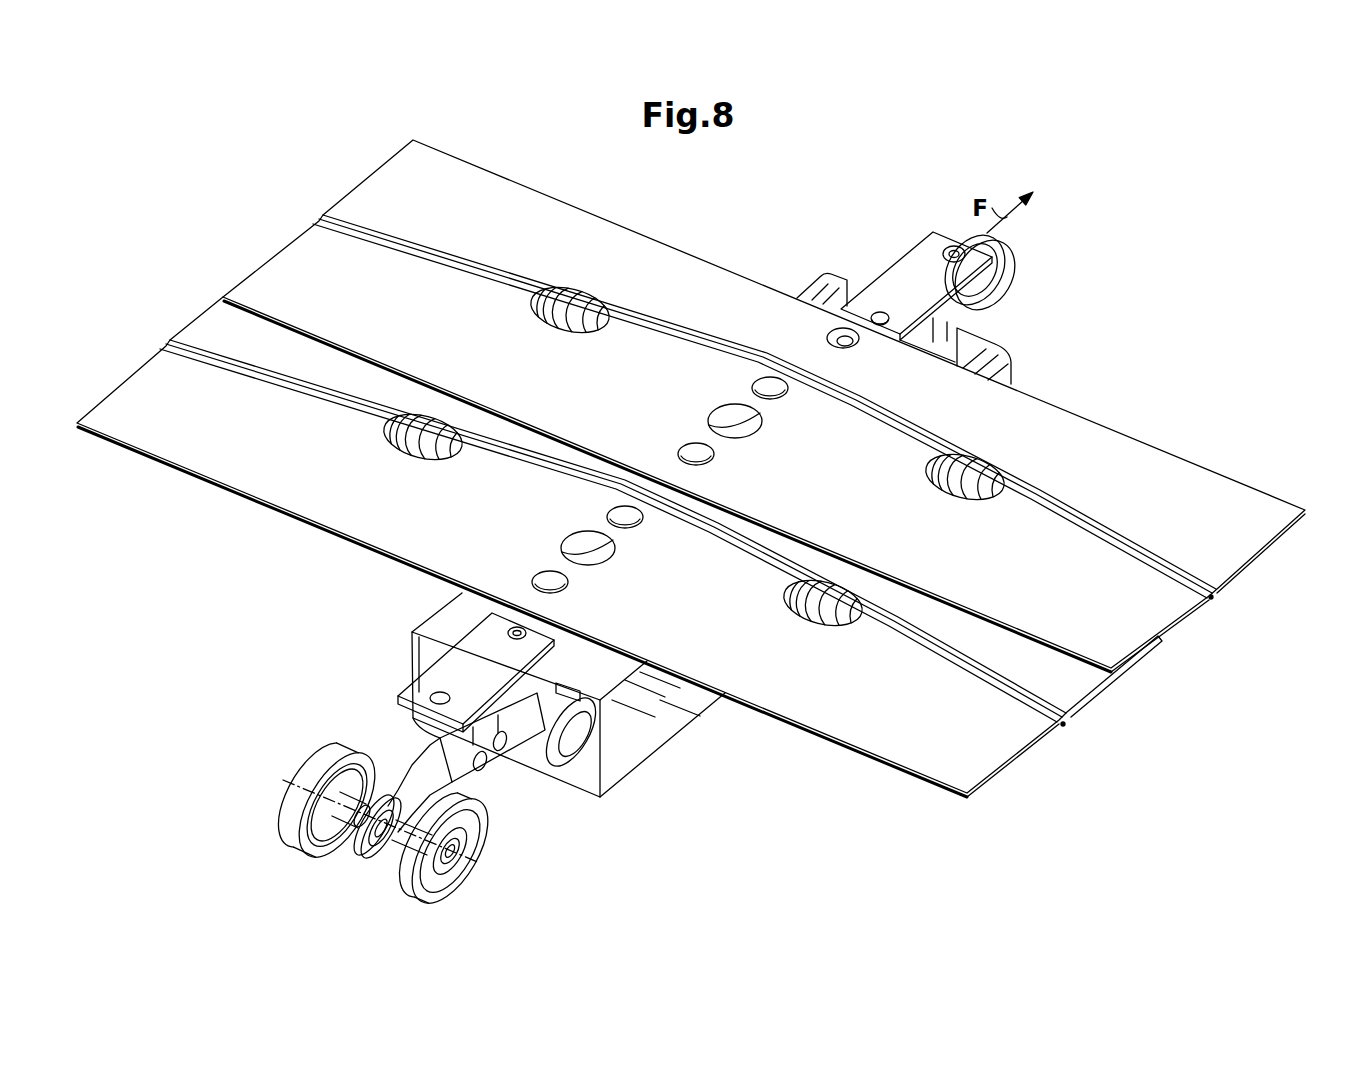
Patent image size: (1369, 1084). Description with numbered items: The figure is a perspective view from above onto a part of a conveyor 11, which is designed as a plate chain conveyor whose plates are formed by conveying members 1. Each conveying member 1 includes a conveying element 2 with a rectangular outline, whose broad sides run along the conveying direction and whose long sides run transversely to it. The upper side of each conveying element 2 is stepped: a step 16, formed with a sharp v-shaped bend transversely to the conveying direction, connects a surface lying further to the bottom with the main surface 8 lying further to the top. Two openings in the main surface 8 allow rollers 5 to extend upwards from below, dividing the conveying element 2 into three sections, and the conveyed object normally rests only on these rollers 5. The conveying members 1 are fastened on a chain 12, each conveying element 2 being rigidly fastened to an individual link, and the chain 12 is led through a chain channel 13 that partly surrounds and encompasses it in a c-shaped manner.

The conveying member 1 is at (1262, 586).
The conveying element 2 is at (1212, 600).
The roller 5 is at (557, 319).
The main surface 8 is at (799, 471).
The conveyor 11 is at (1090, 248).
The chain 12 is at (345, 870).
The chain channel 13 is at (635, 744).
The step 16 is at (318, 210).